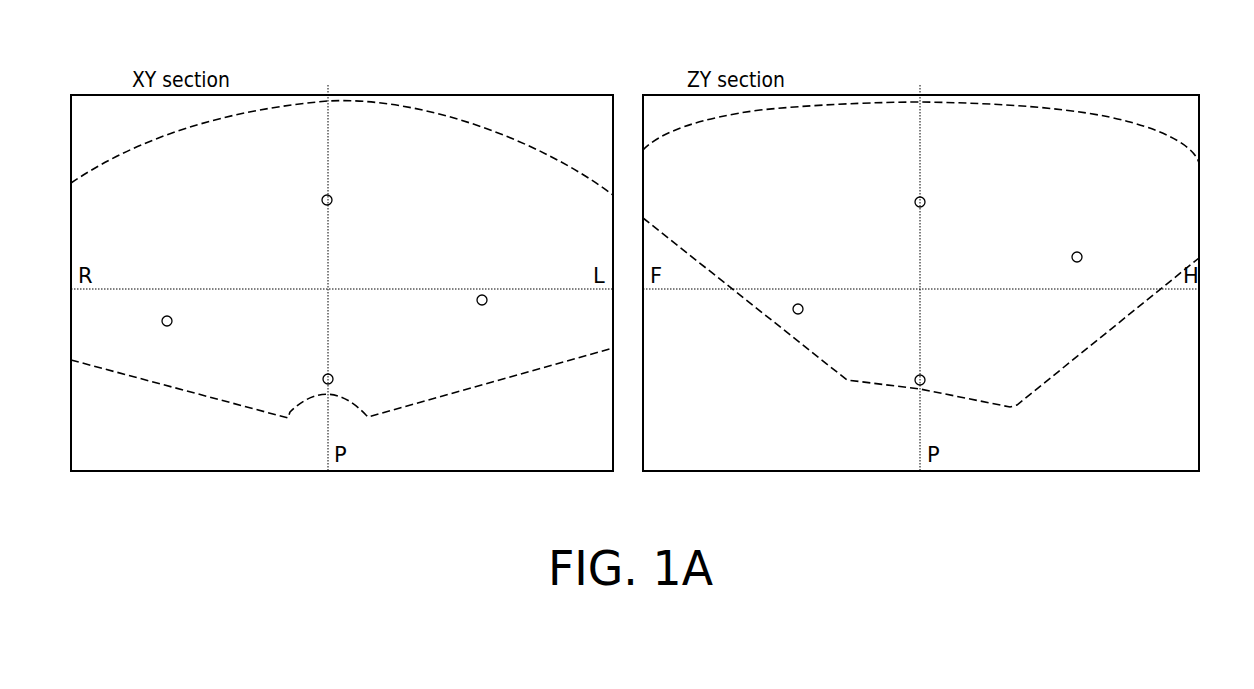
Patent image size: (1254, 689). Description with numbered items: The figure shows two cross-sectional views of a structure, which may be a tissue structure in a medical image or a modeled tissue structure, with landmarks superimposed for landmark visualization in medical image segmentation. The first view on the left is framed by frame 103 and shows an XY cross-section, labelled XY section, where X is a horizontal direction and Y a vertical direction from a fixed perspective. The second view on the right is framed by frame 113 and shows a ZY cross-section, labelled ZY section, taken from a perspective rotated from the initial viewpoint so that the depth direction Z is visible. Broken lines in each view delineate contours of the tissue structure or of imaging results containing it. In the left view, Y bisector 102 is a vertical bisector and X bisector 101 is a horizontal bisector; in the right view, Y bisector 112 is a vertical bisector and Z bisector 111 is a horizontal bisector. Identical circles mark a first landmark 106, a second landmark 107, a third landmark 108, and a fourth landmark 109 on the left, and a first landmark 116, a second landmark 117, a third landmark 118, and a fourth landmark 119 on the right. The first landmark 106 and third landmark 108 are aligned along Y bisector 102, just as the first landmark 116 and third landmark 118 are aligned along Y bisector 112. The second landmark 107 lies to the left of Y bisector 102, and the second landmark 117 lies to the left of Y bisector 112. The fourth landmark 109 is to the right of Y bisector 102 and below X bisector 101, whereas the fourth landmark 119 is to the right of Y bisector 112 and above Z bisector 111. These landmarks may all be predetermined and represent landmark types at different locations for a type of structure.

The X bisector 101 is at (342, 264).
The Y bisector 102 is at (380, 278).
The frame 103 is at (342, 223).
The first landmark 106 is at (332, 200).
The second landmark 107 is at (172, 321).
The third landmark 108 is at (333, 379).
The fourth landmark 109 is at (487, 300).
The Z bisector 111 is at (921, 317).
The Y bisector 112 is at (971, 278).
The frame 113 is at (921, 218).
The first landmark 116 is at (925, 202).
The second landmark 117 is at (803, 309).
The third landmark 118 is at (925, 380).
The fourth landmark 119 is at (1077, 252).